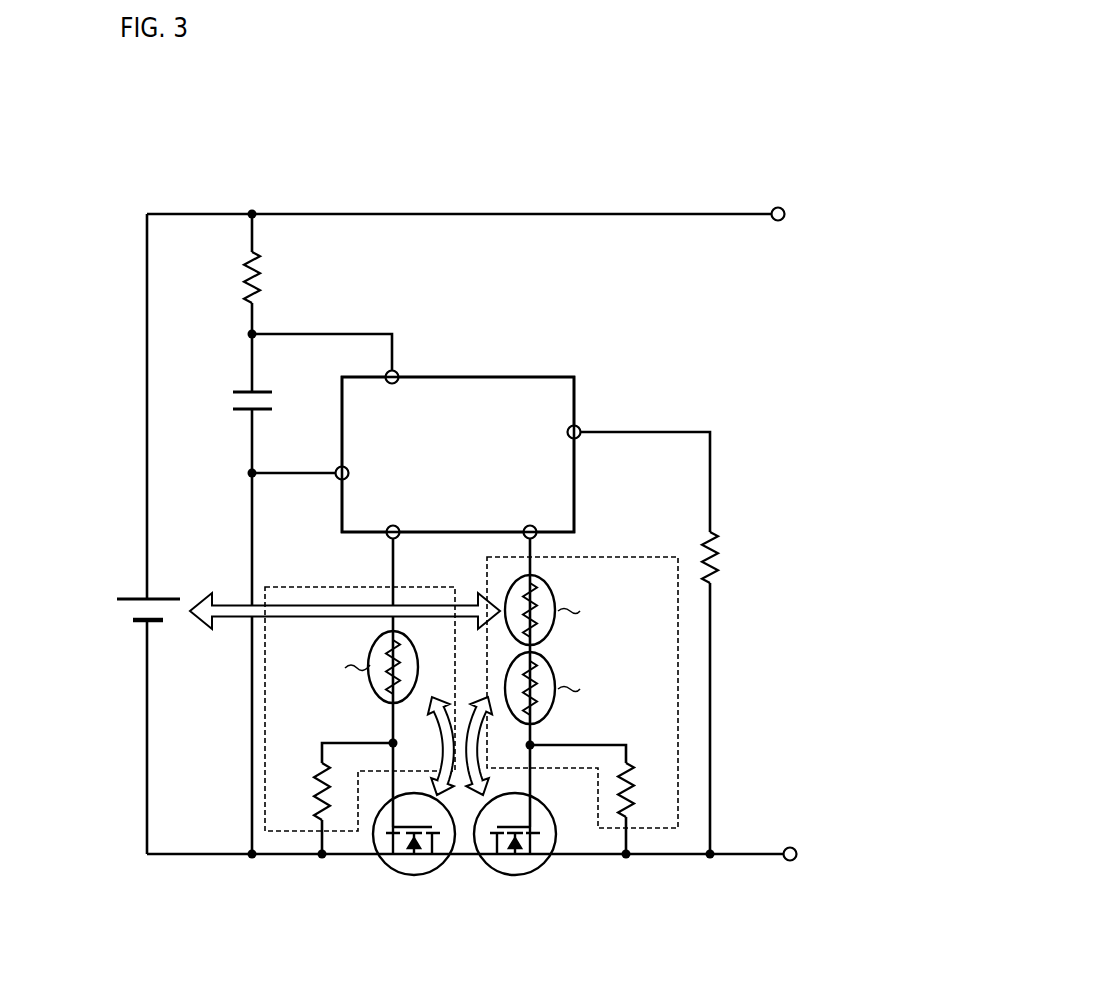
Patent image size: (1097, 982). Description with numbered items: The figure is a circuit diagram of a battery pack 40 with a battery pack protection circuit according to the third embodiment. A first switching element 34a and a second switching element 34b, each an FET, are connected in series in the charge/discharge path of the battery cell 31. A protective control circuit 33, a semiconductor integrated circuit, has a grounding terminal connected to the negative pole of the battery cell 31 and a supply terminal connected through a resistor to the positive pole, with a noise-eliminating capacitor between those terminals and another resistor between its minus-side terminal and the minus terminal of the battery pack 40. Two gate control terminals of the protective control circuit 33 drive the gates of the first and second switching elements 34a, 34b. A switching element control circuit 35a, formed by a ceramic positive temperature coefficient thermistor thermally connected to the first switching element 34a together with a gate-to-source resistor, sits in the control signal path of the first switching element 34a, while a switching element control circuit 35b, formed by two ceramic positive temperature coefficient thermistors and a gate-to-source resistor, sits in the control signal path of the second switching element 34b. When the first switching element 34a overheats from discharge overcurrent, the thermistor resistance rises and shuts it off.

The battery pack 40 is at (720, 106).
The battery cell 31 is at (113, 611).
The protective control circuit 33 is at (574, 377).
The switching element control circuit 35a is at (316, 585).
The switching element control circuit 35b is at (626, 556).
The first switching element 34a is at (418, 876).
The second switching element 34b is at (523, 876).